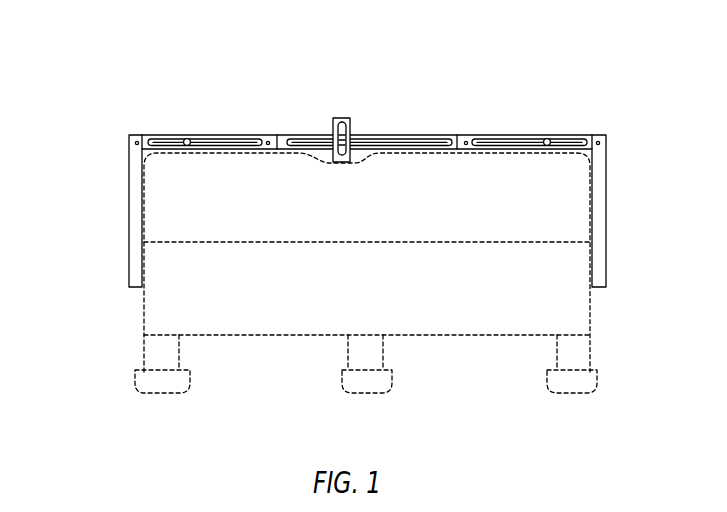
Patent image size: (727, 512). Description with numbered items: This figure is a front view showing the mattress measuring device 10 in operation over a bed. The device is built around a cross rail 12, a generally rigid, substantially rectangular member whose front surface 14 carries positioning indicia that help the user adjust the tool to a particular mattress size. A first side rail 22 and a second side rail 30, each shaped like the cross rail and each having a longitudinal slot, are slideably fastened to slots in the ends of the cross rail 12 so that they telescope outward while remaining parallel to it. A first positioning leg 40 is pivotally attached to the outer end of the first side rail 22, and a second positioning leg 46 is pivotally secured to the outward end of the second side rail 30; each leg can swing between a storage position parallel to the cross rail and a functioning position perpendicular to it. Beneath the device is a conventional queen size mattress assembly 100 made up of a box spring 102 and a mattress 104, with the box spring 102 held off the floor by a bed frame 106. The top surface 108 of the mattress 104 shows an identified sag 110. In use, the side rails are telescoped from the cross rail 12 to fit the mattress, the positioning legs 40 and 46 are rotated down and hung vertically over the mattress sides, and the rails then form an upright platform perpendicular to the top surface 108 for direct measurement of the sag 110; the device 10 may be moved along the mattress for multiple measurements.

The mattress measuring device 10 is at (360, 148).
The cross rail 12 is at (375, 130).
The front surface 14 is at (447, 135).
The first side rail 22 is at (198, 130).
The second side rail 30 is at (509, 130).
The first positioning leg 40 is at (129, 233).
The second positioning leg 46 is at (606, 210).
The mattress assembly 100 is at (404, 289).
The box spring 102 is at (470, 317).
The mattress 104 is at (440, 243).
The bed frame 106 is at (179, 352).
The top surface 108 is at (265, 153).
The sag 110 is at (322, 163).